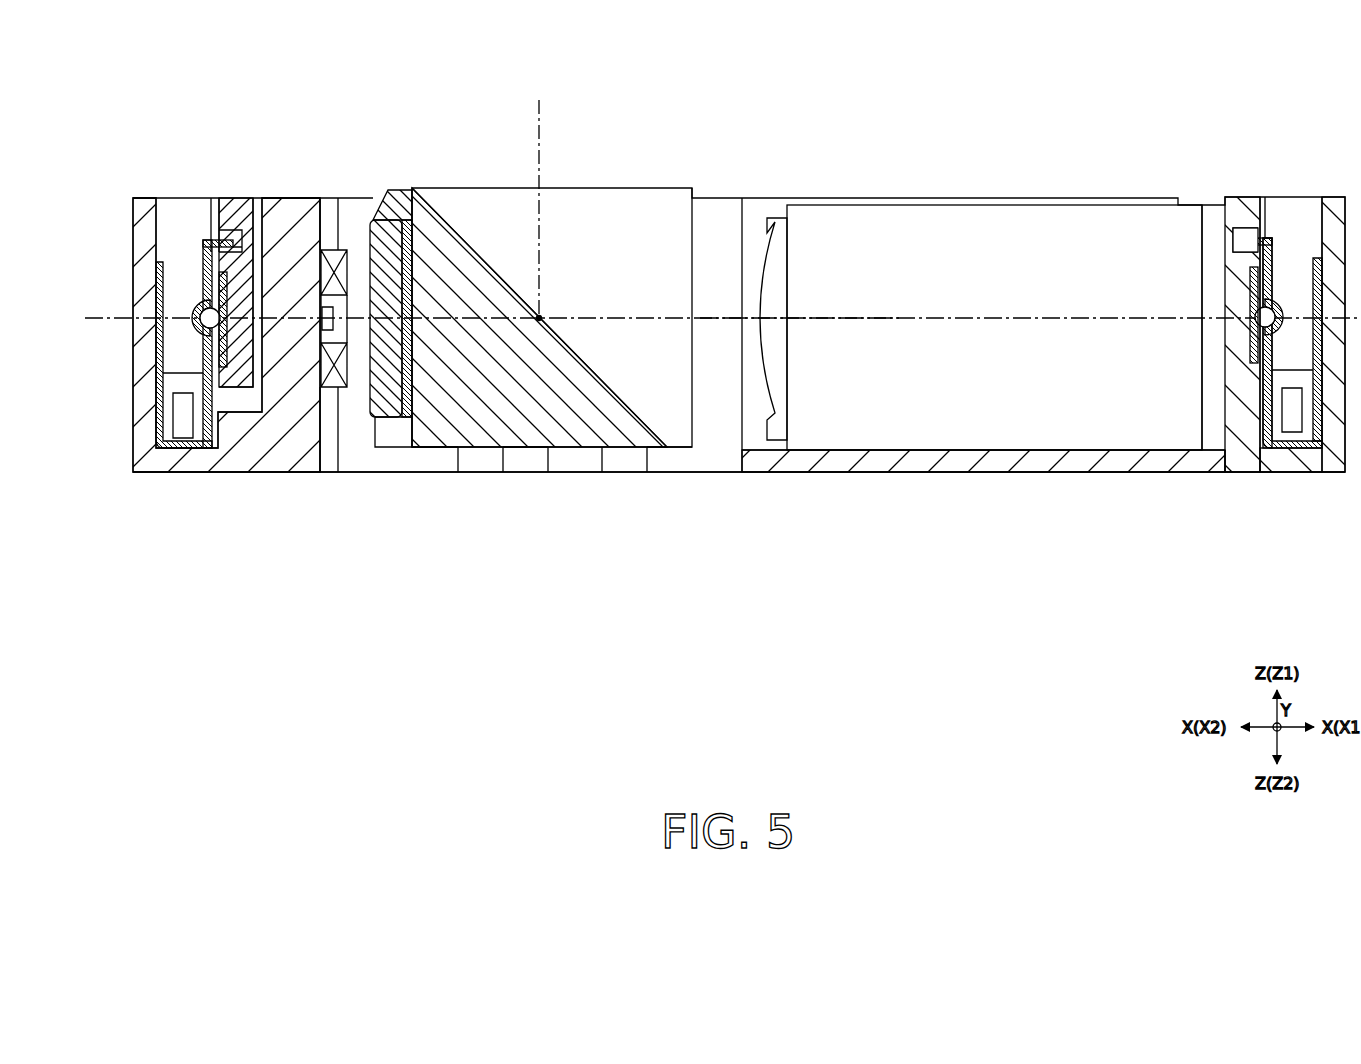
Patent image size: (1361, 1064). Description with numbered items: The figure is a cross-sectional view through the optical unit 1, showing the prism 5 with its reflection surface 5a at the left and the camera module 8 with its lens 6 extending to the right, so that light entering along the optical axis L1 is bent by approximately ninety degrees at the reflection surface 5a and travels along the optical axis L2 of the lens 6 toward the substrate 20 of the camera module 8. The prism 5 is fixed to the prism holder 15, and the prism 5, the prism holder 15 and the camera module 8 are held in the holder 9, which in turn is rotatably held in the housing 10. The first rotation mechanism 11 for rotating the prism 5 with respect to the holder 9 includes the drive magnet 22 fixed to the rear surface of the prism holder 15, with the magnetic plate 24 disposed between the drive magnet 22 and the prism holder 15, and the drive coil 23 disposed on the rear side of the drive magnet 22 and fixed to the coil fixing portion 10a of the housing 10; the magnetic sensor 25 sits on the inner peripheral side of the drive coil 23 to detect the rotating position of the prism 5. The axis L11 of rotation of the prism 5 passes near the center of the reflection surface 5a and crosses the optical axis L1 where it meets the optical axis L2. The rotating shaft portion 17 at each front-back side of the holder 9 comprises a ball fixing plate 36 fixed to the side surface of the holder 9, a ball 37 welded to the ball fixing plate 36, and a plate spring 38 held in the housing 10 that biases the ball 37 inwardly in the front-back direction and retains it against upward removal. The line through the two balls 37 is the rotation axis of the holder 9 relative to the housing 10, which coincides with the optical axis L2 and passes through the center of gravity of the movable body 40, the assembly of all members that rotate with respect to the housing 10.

The optical unit 1 is at (1213, 55).
The prism 5 is at (665, 188).
The reflection surface 5a is at (618, 400).
The lens 6 is at (775, 218).
The camera module 8 is at (997, 205).
The holder 9 is at (985, 472).
The housing 10 is at (280, 472).
The coil fixing portion 10a is at (275, 198).
The first rotation mechanism 11 is at (356, 163).
The prism holder 15 is at (548, 470).
The rotating shaft portion 17 is at (130, 288).
The substrate 20 is at (1215, 205).
The drive magnet 22 is at (392, 212).
The drive coil 23 is at (320, 245).
The magnetic plate 24 is at (412, 247).
The magnetic sensor 25 is at (322, 320).
The ball fixing plate 36 is at (228, 285).
The ball 37 is at (218, 316).
The plate spring 38 is at (733, 337).
The movable body 40 is at (845, 472).
The optical axis L1 is at (545, 107).
The axis L11 is at (541, 316).
The optical axis L2 is at (940, 310).